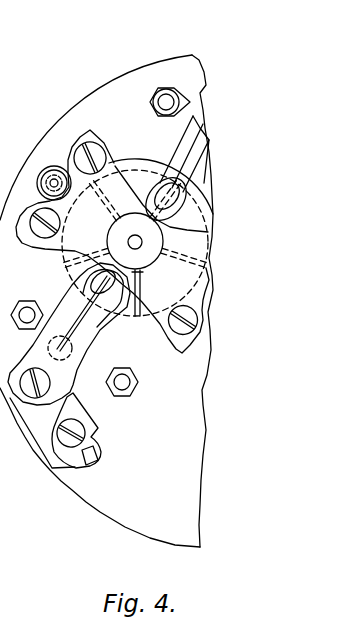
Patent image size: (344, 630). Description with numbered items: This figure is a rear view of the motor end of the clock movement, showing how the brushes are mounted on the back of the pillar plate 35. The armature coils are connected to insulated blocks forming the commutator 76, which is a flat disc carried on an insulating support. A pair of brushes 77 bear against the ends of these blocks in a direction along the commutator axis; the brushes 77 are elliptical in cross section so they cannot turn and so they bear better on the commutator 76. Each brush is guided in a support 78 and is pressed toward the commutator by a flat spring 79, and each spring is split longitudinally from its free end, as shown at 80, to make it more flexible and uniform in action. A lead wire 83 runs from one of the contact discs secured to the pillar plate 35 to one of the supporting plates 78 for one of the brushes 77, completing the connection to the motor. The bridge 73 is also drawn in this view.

The pillar plate 35 is at (100, 72).
The bridge 73 is at (107, 182).
The commutator 76 is at (72, 258).
The brushes 77 is at (157, 187).
The supports 78 is at (72, 404).
The flat springs 79 is at (187, 153).
The split 80 is at (80, 330).
The lead wire 83 is at (99, 461).